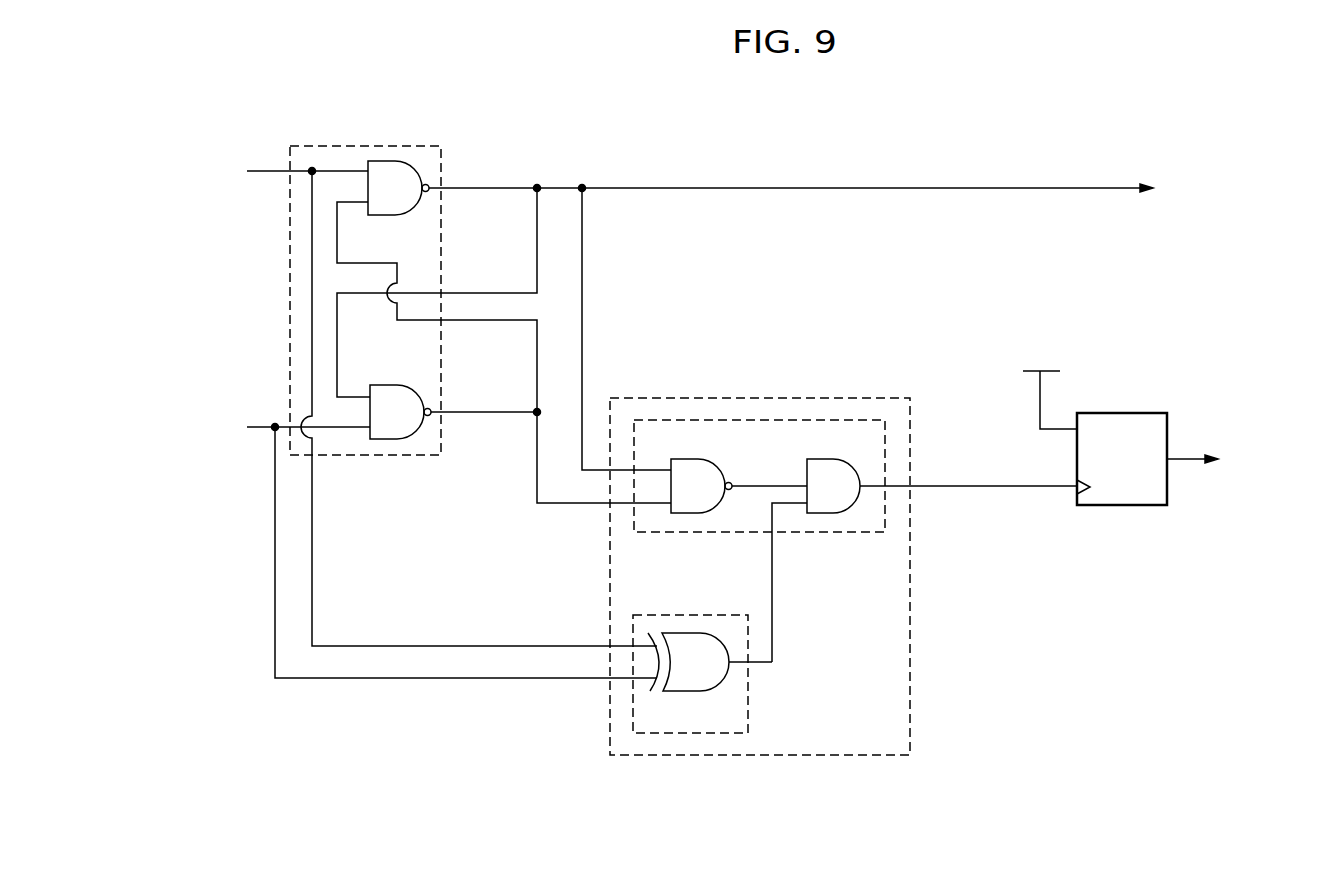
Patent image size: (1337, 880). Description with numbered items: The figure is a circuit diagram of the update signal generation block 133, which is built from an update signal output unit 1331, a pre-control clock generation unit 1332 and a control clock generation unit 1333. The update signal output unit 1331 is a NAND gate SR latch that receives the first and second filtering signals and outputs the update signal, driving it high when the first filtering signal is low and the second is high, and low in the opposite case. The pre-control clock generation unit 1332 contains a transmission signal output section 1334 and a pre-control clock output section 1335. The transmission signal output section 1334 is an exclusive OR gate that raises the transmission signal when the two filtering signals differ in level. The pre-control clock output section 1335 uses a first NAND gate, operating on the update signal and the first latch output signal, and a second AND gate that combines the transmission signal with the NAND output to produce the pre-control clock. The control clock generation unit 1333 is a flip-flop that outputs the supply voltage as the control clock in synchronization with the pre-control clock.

The update signal generation block 133 is at (570, 71).
The update signal output unit 1331 is at (363, 146).
The pre-control clock generation unit 1332 is at (825, 398).
The control clock generation unit 1333 is at (1123, 413).
The transmission signal output section 1334 is at (748, 702).
The pre-control clock output section 1335 is at (728, 420).